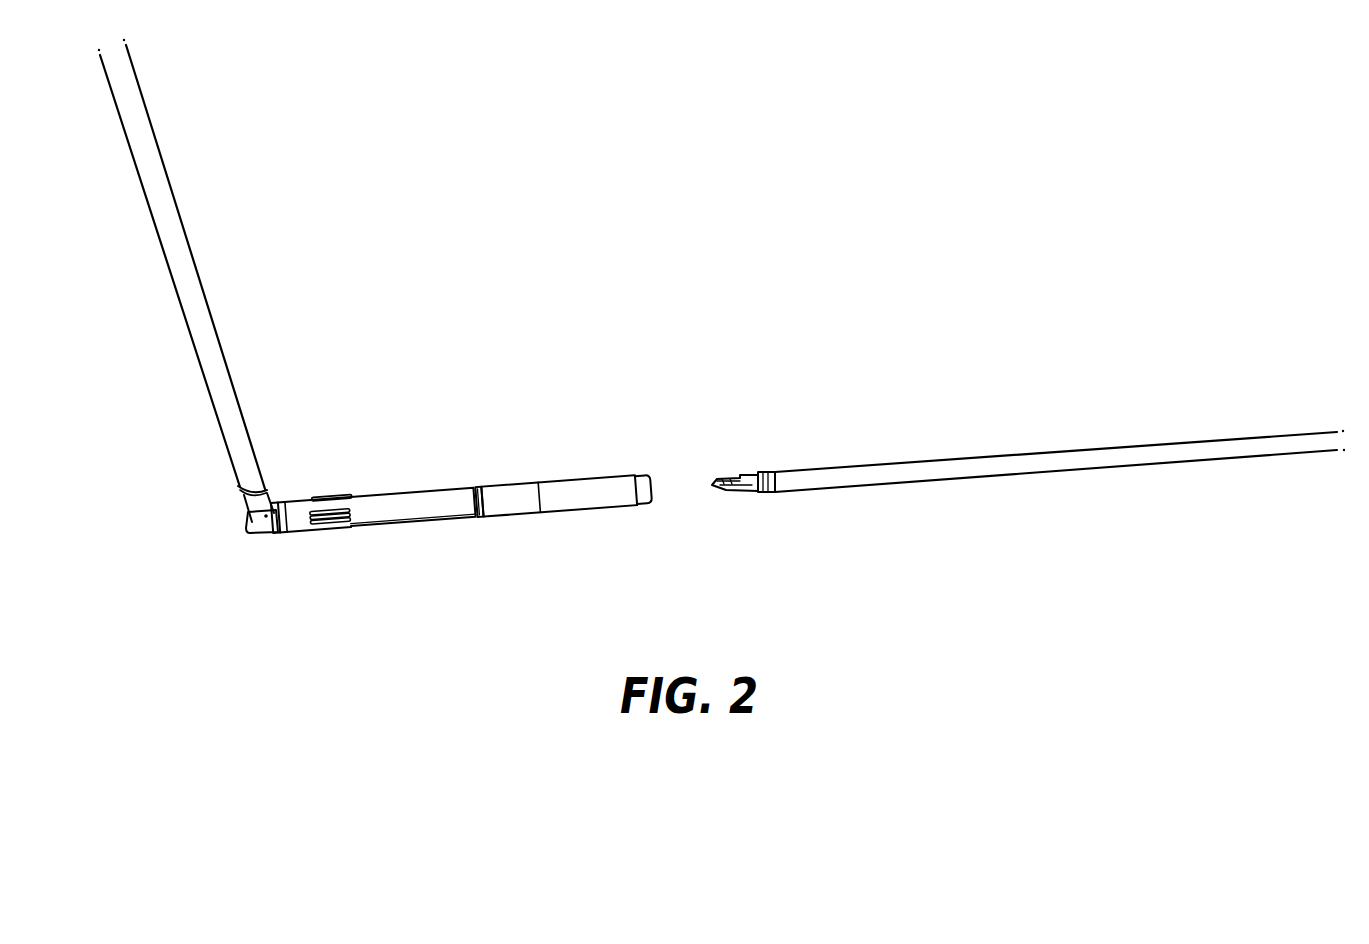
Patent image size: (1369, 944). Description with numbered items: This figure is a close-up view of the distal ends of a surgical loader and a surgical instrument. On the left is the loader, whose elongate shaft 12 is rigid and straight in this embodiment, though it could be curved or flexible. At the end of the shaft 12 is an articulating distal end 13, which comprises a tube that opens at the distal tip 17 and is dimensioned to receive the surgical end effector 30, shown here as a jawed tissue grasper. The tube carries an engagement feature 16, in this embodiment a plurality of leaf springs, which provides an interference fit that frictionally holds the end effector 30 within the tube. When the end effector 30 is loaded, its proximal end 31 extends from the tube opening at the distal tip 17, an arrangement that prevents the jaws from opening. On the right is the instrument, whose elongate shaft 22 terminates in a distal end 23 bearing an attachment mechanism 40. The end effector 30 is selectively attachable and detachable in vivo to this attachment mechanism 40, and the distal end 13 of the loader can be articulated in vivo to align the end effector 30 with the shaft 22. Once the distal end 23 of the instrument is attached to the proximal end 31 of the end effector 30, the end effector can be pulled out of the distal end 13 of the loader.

The elongate shaft 12 is at (203, 286).
The distal end 13 is at (407, 526).
The engagement feature 16 is at (327, 497).
The distal tip 17 is at (473, 488).
The surgical end effector 30 is at (577, 476).
The proximal end 31 is at (655, 481).
The attachment mechanism 40 is at (744, 462).
The distal end 23 is at (722, 517).
The elongate shaft 22 is at (1028, 453).